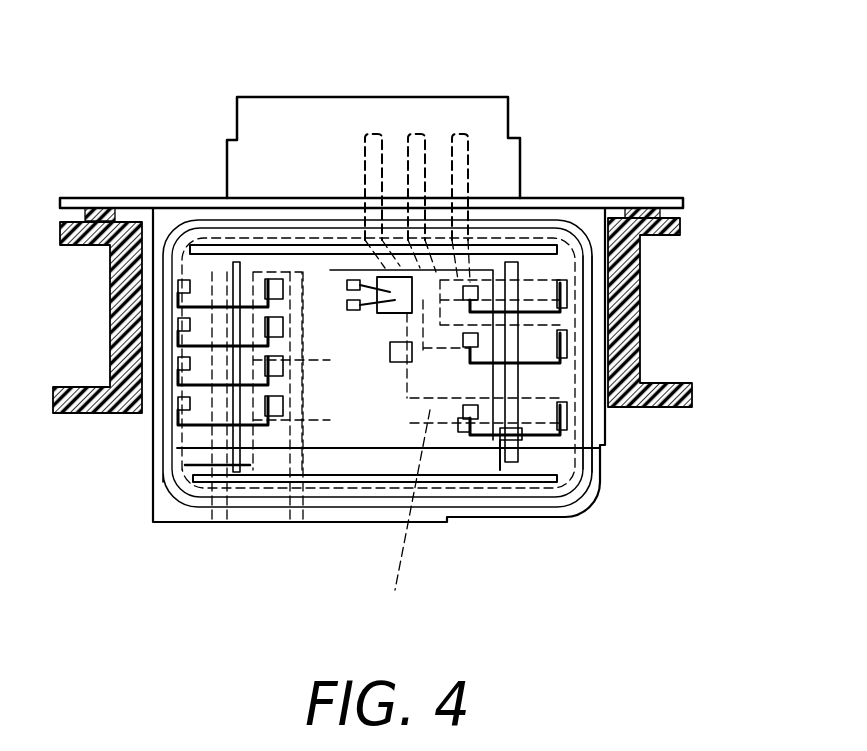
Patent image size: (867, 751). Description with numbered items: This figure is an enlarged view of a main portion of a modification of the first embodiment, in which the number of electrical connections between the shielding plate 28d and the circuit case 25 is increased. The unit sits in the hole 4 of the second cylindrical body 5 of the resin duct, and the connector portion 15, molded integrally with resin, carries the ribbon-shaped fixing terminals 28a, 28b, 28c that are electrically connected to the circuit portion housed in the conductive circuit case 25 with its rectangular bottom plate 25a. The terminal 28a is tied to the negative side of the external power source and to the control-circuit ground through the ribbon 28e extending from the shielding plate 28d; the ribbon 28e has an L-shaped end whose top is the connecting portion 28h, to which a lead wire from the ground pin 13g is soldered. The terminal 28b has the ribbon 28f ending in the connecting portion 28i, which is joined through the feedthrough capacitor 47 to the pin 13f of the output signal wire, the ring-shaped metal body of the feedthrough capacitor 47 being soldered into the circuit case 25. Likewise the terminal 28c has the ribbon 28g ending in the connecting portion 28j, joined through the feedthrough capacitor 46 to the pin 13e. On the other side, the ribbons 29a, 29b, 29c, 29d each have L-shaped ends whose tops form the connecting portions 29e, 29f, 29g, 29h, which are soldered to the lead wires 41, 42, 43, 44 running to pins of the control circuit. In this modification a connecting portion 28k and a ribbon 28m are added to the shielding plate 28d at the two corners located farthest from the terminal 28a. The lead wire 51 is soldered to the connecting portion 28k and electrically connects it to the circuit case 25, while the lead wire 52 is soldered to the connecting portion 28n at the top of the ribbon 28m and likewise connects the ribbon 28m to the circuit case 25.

The hole 4 is at (603, 220).
The second cylindrical body 5 is at (628, 323).
The connector portion 15 is at (262, 98).
The terminal 28a is at (371, 132).
The terminal 28b is at (416, 132).
The terminal 28c is at (462, 132).
The shielding plate 28d is at (183, 250).
The ribbon 28e is at (395, 515).
The ribbon 28f is at (565, 343).
The ribbon 28g is at (545, 280).
The connecting portion 28h is at (562, 410).
The connecting portion 28i is at (565, 336).
The connecting portion 28j is at (568, 292).
The connecting portion 28k is at (190, 462).
The ribbon 28m is at (560, 525).
The connecting portion 28n is at (556, 441).
The ribbon 29a is at (205, 528).
The ribbon 29b is at (228, 528).
The ribbon 29c is at (290, 528).
The ribbon 29d is at (318, 528).
The connecting portion 29e is at (190, 425).
The connecting portion 29f is at (178, 367).
The connecting portion 29g is at (178, 326).
The connecting portion 29h is at (178, 268).
The pin 13e is at (470, 288).
The pin 13f is at (468, 436).
The pin 13g is at (505, 470).
The circuit case 25 is at (556, 392).
The bottom plate 25a is at (543, 484).
The lead wire 41 is at (190, 440).
The lead wire 42 is at (185, 395).
The lead wire 43 is at (178, 355).
The lead wire 44 is at (178, 308).
The feedthrough capacitor 46 is at (640, 300).
The feedthrough capacitor 47 is at (578, 515).
The lead wire 51 is at (180, 505).
The lead wire 52 is at (580, 497).